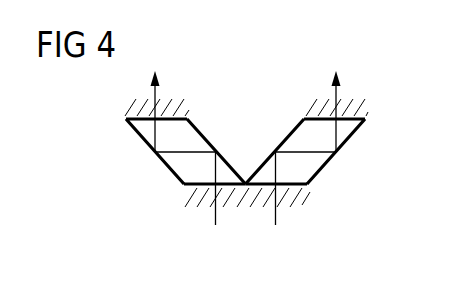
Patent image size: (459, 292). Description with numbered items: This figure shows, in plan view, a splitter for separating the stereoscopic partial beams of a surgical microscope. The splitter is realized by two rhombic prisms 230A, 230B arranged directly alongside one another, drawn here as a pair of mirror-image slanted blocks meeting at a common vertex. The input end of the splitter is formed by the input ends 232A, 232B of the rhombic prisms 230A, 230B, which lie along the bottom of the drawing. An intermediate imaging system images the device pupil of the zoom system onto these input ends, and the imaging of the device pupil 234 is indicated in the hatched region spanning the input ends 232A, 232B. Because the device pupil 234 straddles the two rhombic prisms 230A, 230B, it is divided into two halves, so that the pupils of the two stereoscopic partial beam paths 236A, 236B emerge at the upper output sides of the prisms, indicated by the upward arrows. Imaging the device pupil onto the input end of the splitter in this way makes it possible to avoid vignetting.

The rhombic prism 230A is at (133, 127).
The rhombic prism 230B is at (358, 127).
The input end 232A is at (193, 186).
The input end 232B is at (298, 186).
The imaging of the device pupil 234 is at (240, 202).
The pupil of a stereoscopic partial beam path 236A is at (173, 107).
The pupil of a stereoscopic partial beam path 236B is at (318, 105).